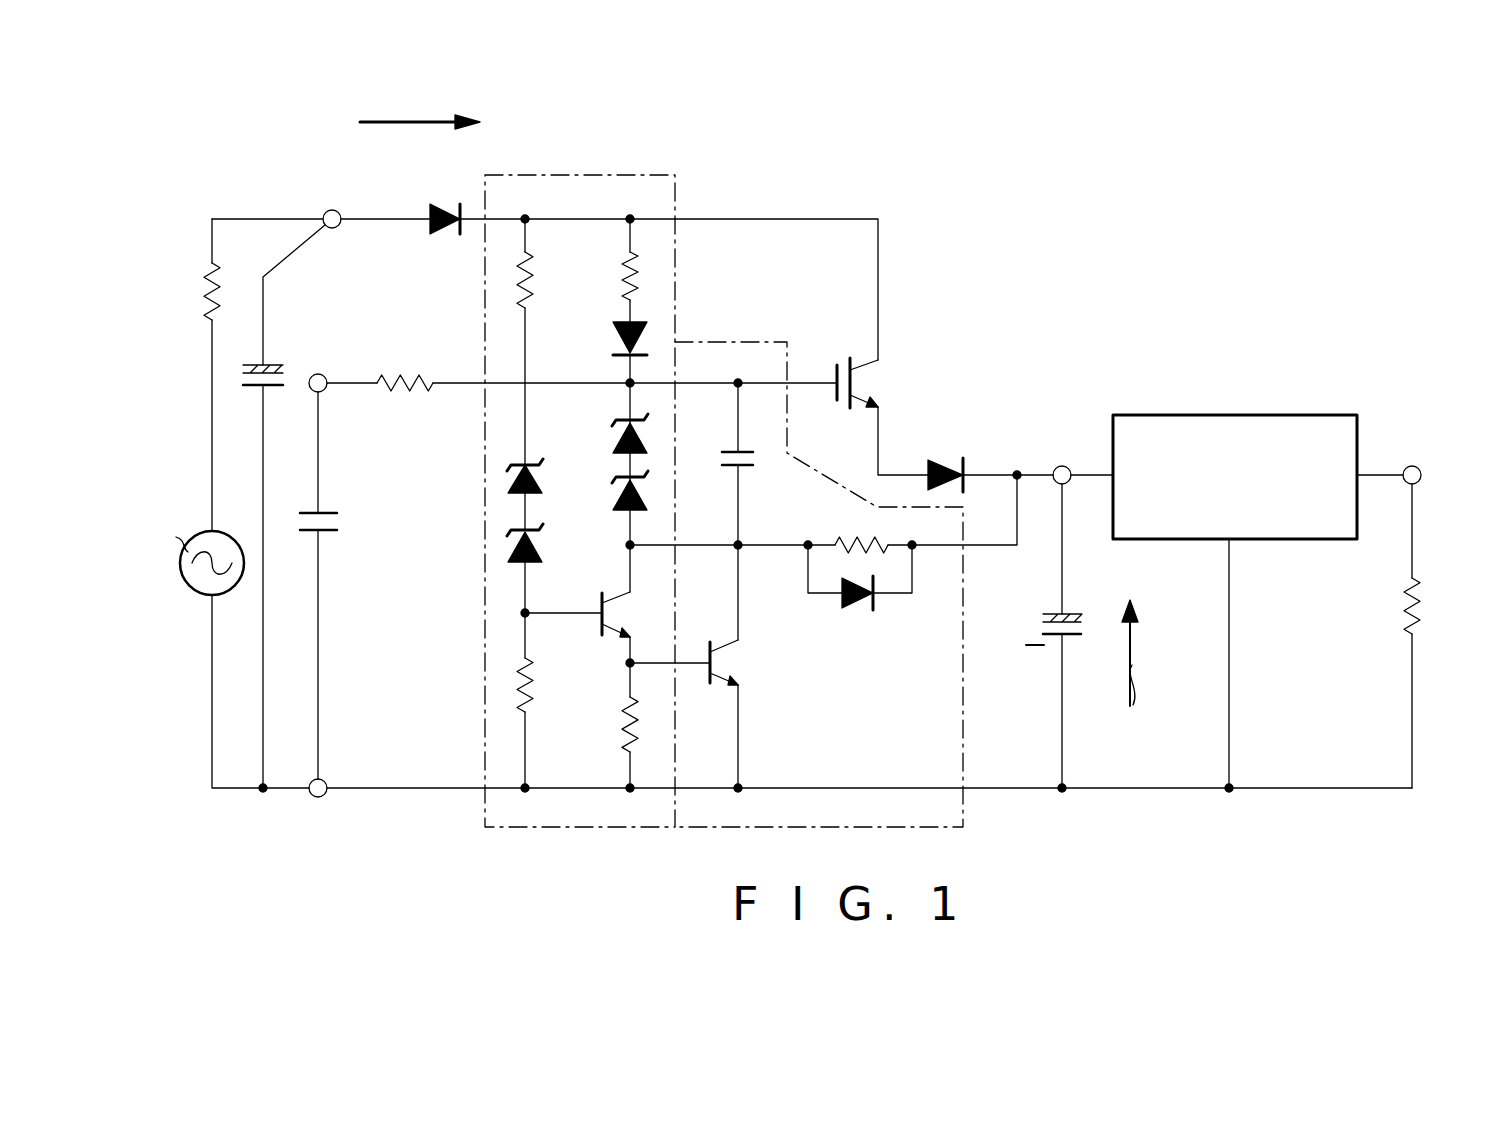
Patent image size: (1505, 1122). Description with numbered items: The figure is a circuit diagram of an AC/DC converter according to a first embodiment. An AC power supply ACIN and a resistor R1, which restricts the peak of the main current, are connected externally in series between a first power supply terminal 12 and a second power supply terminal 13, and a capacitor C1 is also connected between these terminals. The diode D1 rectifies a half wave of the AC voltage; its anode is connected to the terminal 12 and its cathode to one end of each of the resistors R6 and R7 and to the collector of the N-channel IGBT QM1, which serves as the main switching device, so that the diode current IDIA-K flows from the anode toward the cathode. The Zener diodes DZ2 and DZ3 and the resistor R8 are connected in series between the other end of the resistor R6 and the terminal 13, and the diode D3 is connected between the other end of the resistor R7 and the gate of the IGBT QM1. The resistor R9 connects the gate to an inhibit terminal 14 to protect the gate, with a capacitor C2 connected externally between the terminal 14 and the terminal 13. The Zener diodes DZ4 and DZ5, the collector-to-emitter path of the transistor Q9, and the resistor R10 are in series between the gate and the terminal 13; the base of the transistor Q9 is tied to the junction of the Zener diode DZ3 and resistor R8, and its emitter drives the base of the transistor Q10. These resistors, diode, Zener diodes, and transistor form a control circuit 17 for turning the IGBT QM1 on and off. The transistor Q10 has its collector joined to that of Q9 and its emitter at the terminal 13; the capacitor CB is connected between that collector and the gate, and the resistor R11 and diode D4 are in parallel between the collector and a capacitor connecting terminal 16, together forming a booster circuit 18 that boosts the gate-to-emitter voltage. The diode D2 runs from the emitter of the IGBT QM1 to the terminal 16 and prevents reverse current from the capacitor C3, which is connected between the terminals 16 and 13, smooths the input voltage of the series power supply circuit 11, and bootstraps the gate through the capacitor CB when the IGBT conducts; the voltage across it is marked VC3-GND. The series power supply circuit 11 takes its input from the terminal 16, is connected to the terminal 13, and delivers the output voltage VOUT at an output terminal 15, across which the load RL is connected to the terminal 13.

The series power supply circuit 11 is at (1246, 414).
The first power supply terminal 12 is at (332, 210).
The second power supply terminal 13 is at (320, 797).
The inhibit terminal 14 is at (318, 373).
The output terminal 15 is at (1410, 466).
The capacitor connecting terminal 16 is at (1062, 466).
The control circuit 17 is at (597, 172).
The booster circuit 18 is at (738, 340).
The resistor R1 is at (196, 293).
The capacitor C1 is at (243, 392).
The capacitor C2 is at (340, 522).
The capacitor C3 is at (1088, 620).
The capacitor CB is at (752, 455).
The resistor R6 is at (535, 285).
The resistor R7 is at (620, 274).
The resistor R8 is at (538, 672).
The resistor R9 is at (407, 373).
The resistor R10 is at (620, 722).
The resistor R11 is at (853, 537).
The load RL is at (1426, 605).
The diode D1 is at (441, 204).
The diode D2 is at (952, 460).
The diode D3 is at (613, 338).
The diode D4 is at (858, 610).
The Zener diode DZ2 is at (507, 475).
The Zener diode DZ3 is at (507, 540).
The Zener diode DZ4 is at (613, 430).
The Zener diode DZ5 is at (614, 488).
The NPN bipolar transistor Q9 is at (598, 602).
The NPN bipolar transistor Q10 is at (725, 662).
The N-channel IGBT QM1 is at (872, 381).
The AC power supply ACIN is at (180, 555).
The output voltage VOUT is at (1463, 478).
The voltage across C3 VC3-GND is at (1122, 670).
The diode current IDIA-K is at (420, 99).